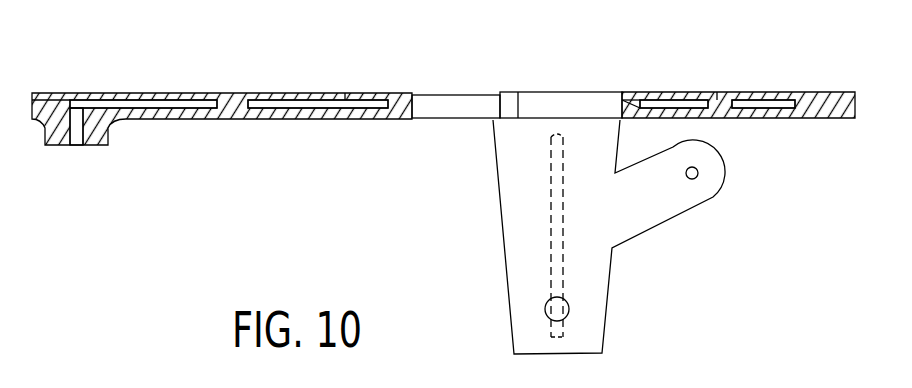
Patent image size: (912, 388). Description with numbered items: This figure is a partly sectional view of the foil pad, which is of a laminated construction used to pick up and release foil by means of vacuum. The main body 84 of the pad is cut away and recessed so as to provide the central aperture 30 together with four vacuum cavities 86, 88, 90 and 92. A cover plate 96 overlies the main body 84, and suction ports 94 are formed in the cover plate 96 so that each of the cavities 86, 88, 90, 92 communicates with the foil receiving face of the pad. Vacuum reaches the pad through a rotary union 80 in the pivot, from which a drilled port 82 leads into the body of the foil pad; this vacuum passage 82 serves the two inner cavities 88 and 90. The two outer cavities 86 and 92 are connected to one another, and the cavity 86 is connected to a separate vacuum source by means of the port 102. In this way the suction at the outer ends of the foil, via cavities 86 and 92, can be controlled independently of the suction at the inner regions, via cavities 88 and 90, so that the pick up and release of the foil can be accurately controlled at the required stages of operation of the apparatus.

The central aperture 30 is at (462, 107).
The rotary union 80 is at (562, 310).
The drilled port 82 is at (550, 208).
The main body 84 is at (828, 118).
The vacuum cavity 86 is at (173, 108).
The vacuum cavity 88 is at (328, 106).
The vacuum cavity 90 is at (703, 105).
The vacuum cavity 92 is at (778, 107).
The suction ports 94 is at (88, 97).
The cover plate 96 is at (345, 97).
The port 102 is at (78, 140).